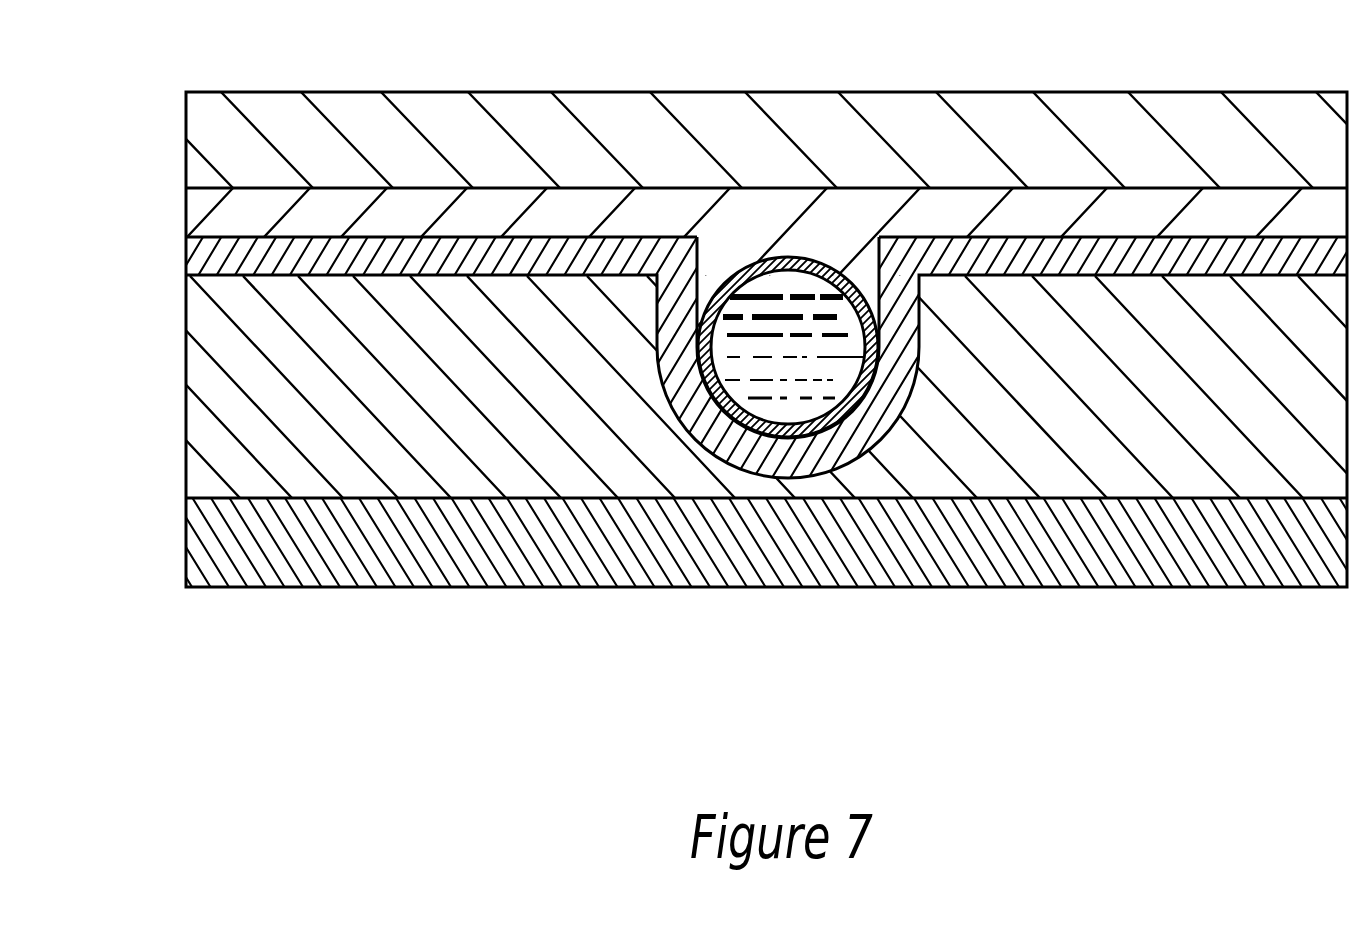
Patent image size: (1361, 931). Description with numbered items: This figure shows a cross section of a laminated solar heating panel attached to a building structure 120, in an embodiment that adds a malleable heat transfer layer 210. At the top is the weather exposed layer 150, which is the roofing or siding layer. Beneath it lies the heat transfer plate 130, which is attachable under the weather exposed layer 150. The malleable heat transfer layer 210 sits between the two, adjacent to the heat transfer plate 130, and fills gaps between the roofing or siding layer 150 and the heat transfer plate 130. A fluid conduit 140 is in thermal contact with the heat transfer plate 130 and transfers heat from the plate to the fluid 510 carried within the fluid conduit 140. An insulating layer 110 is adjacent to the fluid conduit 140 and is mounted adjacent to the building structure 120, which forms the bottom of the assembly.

The insulating layer 110 is at (220, 367).
The building structure 120 is at (207, 548).
The heat transfer plate 130 is at (218, 255).
The fluid conduit 140 is at (815, 255).
The weather exposed layer 150 is at (225, 113).
The malleable heat transfer layer 210 is at (222, 217).
The fluid 510 is at (772, 292).